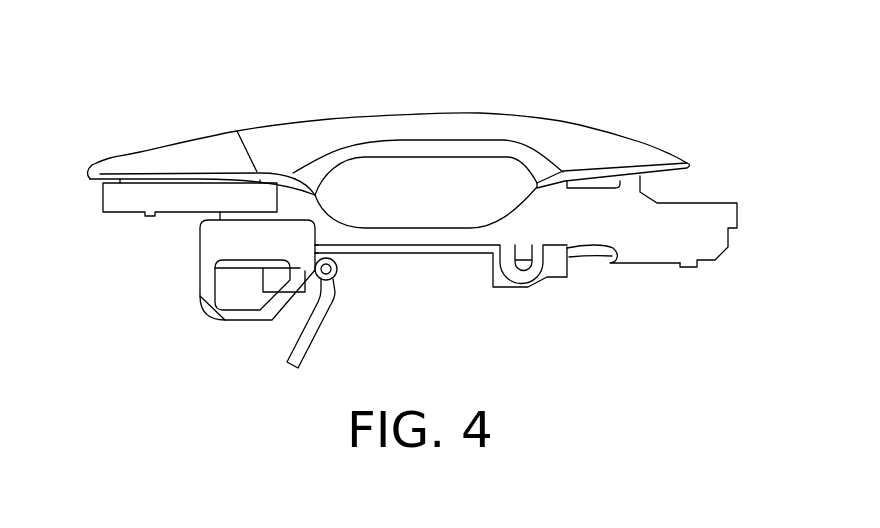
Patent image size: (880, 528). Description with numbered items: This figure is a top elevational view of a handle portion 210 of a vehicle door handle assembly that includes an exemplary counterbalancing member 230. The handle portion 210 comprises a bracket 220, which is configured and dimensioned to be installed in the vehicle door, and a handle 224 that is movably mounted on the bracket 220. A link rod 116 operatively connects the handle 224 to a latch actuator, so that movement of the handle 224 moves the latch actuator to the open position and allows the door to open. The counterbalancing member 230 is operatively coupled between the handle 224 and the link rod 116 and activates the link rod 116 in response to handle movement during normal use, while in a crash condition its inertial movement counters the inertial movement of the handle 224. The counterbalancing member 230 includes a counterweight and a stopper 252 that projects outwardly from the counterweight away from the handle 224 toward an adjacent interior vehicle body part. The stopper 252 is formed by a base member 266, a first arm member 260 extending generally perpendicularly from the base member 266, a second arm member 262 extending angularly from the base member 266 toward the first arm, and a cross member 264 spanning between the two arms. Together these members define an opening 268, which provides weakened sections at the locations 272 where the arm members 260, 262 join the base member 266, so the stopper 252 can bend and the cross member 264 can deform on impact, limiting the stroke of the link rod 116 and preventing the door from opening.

The handle portion 210 is at (592, 86).
The handle 224 is at (417, 127).
The bracket 220 is at (675, 228).
The counterbalancing member 230 is at (160, 313).
The first arm member 260 is at (210, 287).
The base member 266 is at (233, 238).
The opening 268 is at (232, 275).
The locations 272 is at (210, 260).
The stopper 252 is at (210, 303).
The cross member 264 is at (242, 315).
The second arm member 262 is at (278, 298).
The link rod 116 is at (308, 337).